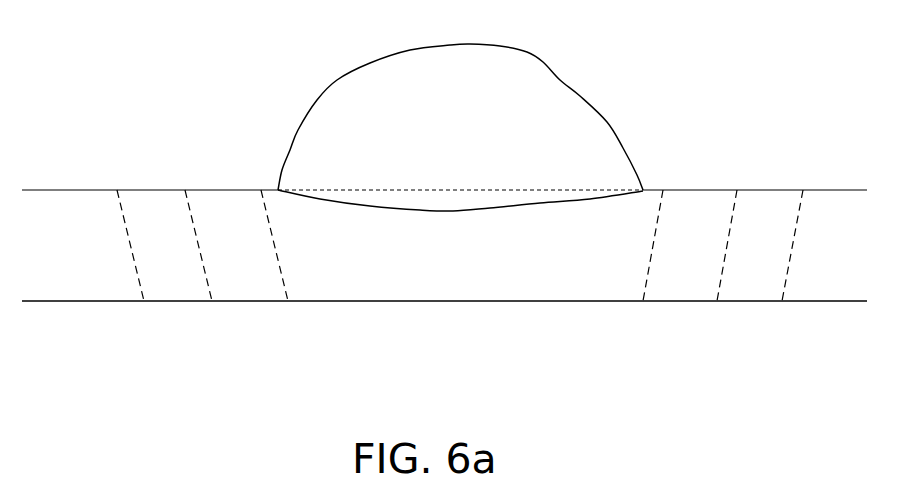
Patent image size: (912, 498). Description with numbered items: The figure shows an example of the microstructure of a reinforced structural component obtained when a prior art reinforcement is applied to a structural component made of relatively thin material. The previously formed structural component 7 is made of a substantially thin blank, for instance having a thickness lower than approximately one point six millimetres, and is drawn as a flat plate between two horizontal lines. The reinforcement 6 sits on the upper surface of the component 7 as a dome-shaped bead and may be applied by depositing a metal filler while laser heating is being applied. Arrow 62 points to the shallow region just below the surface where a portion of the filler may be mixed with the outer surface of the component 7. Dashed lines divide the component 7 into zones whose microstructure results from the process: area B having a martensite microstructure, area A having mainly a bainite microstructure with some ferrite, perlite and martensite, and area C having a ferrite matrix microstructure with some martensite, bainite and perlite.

The reinforcement 6 is at (540, 53).
The arrow 62 is at (495, 198).
The structural component 7 is at (38, 293).